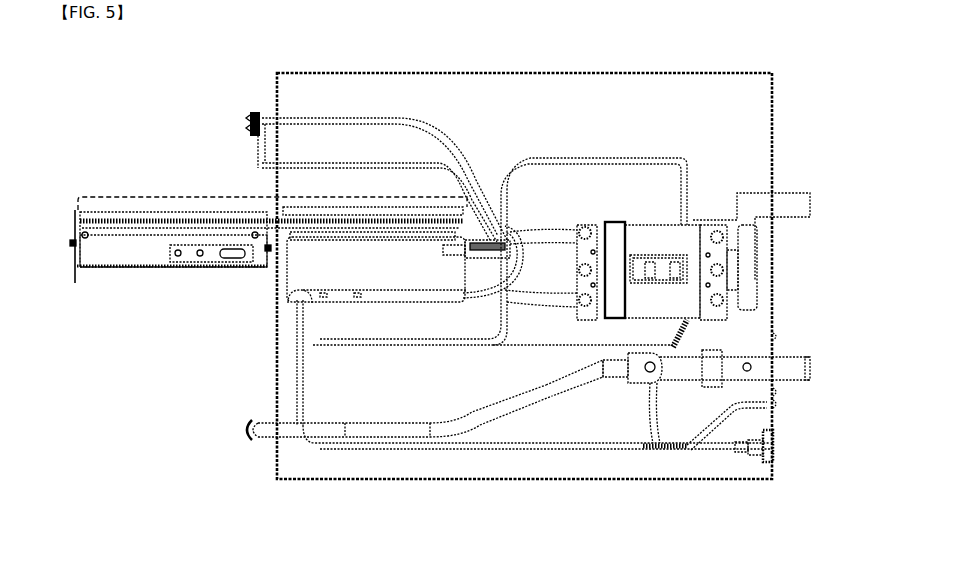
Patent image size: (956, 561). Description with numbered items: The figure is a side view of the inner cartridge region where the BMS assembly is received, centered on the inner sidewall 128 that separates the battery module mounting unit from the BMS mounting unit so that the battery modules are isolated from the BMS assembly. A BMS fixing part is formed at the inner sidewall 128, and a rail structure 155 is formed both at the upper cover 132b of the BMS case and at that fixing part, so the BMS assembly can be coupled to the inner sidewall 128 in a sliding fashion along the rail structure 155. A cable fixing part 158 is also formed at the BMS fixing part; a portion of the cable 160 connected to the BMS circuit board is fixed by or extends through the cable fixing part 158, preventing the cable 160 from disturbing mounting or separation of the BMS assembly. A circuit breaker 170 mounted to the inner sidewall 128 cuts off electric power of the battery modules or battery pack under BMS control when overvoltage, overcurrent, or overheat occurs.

The inner sidewall 128 is at (577, 462).
The rail structure 155 is at (240, 196).
The upper cover 132b is at (128, 238).
The cable fixing part 158 is at (290, 305).
The cable 160 is at (297, 323).
The circuit breaker 170 is at (687, 233).